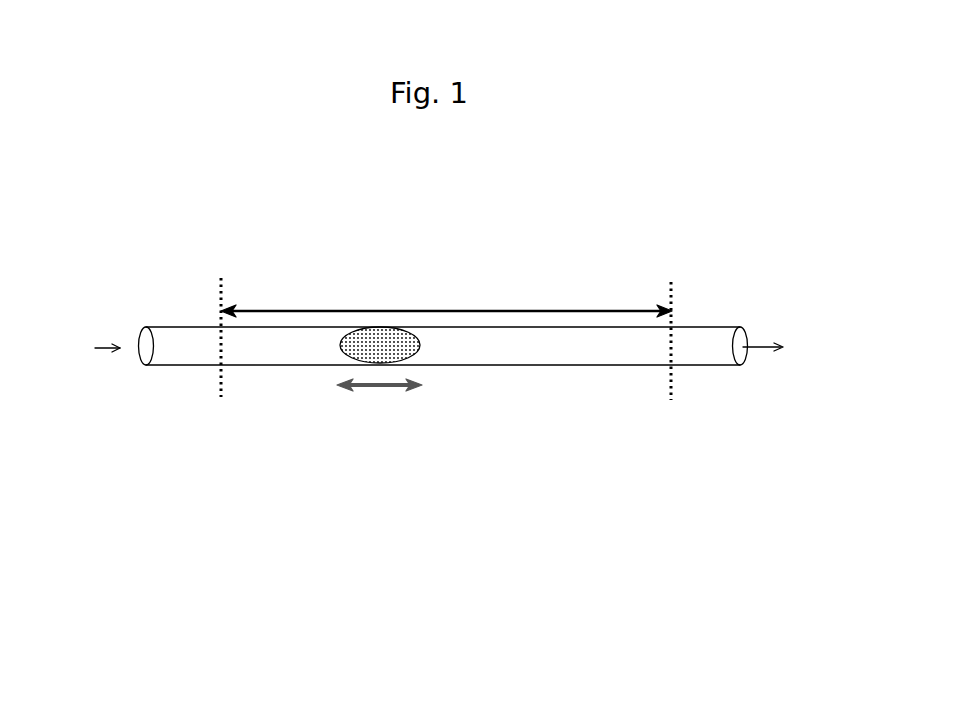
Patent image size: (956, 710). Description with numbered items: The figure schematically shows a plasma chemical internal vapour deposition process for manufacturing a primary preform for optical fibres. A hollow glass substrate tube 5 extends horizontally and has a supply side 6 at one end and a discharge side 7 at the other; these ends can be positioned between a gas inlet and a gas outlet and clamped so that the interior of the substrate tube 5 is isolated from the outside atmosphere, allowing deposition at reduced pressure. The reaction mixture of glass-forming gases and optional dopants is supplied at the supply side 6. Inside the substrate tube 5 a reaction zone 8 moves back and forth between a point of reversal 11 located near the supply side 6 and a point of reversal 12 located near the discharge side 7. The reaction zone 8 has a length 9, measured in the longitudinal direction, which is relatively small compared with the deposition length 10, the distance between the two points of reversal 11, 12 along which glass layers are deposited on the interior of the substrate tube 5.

The hollow glass substrate tube 5 is at (178, 327).
The supply side 6 is at (147, 345).
The discharge side 7 is at (737, 347).
The reaction zone 8 is at (418, 352).
The length of the reaction zone 9 is at (379, 403).
The deposition length 10 is at (435, 311).
The point of reversal 11 is at (223, 412).
The point of reversal 12 is at (656, 417).